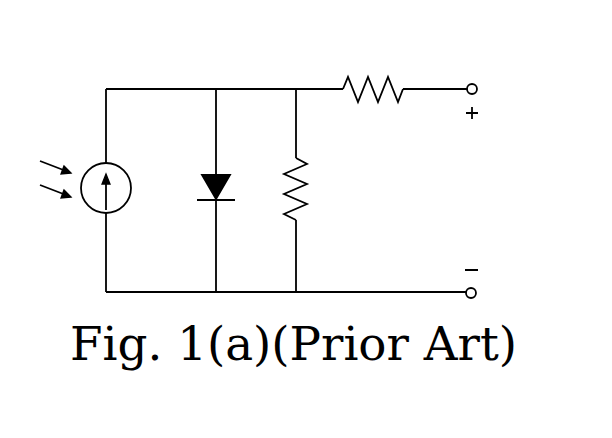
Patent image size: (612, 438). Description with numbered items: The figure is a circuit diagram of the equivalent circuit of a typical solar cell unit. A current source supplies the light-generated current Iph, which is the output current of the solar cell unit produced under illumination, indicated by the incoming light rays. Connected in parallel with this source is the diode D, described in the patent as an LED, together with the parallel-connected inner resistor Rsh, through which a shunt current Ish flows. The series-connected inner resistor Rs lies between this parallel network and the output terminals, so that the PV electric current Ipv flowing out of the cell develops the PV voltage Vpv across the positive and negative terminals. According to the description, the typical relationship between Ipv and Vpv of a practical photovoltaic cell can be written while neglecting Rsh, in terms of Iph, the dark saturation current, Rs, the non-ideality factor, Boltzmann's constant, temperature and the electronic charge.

The light-generated current Iph is at (90, 118).
The LED D is at (208, 183).
The parallel-connected inner resistor Rsh is at (317, 189).
The shunt current Ish is at (308, 110).
The series-connected inner resistor Rs is at (373, 73).
The PV electric current Ipv is at (452, 78).
The PV voltage Vpv is at (479, 191).